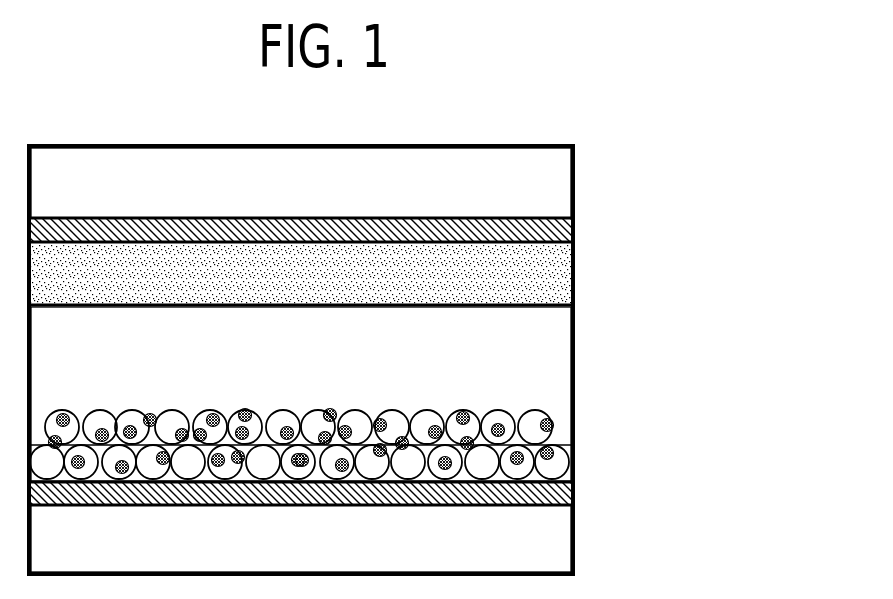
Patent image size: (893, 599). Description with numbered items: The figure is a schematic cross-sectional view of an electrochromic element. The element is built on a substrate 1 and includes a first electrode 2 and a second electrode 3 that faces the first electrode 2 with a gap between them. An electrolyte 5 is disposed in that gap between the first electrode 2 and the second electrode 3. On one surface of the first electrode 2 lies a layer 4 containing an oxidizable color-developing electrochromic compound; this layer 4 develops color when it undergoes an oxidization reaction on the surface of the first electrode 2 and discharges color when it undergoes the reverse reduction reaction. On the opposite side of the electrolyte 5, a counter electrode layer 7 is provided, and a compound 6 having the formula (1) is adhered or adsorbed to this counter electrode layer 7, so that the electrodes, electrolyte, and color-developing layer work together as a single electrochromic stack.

The substrate 1 is at (575, 178).
The first electrode 2 is at (575, 227).
The second electrode 3 is at (575, 491).
The layer containing an oxidizable color-developing electrochromic compound 4 is at (575, 272).
The electrolyte 5 is at (575, 344).
The compound having the formula (1) 6 is at (575, 416).
The counter electrode layer 7 is at (575, 446).